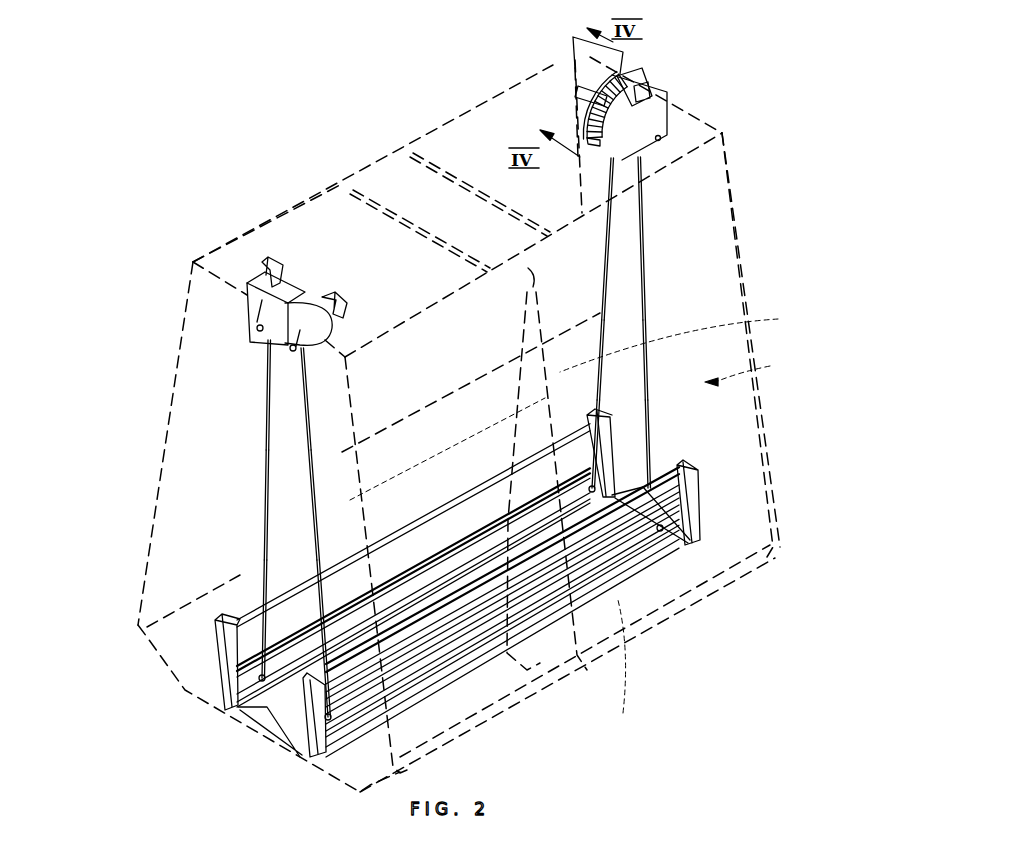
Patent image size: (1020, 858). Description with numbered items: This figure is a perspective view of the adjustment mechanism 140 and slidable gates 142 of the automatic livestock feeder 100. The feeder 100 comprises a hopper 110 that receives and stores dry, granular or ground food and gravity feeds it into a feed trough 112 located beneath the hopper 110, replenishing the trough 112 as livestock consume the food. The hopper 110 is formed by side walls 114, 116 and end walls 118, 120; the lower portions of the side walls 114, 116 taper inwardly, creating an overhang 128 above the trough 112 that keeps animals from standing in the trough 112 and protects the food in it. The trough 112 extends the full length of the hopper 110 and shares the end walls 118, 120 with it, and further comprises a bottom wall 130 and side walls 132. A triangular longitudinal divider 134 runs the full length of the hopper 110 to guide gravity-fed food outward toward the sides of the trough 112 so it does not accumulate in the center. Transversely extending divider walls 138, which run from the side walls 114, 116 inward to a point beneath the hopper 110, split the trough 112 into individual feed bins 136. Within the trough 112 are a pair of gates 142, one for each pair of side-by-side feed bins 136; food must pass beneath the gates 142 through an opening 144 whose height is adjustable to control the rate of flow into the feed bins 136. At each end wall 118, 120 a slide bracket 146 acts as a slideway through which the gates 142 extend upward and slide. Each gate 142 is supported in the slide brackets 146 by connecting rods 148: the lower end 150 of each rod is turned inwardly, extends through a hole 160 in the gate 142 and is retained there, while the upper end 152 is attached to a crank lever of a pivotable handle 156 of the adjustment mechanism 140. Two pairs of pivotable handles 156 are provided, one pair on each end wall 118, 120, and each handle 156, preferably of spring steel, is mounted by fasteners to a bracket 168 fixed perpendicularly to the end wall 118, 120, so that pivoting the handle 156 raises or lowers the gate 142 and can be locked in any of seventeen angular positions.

The feeder 100 is at (165, 108).
The hopper 110 is at (695, 194).
The feed trough 112 is at (693, 561).
The side wall 114 is at (386, 185).
The side wall 116 is at (520, 248).
The end wall 118 is at (682, 96).
The end wall 120 is at (217, 362).
The overhang 128 is at (752, 370).
The bottom wall 130 is at (198, 697).
The side walls 132 is at (473, 723).
The longitudinal divider 134 is at (257, 722).
The feed bins 136 is at (487, 685).
The divider walls 138 is at (685, 344).
The adjustment mechanism 140 is at (300, 268).
The gates 142 is at (647, 537).
The opening 144 is at (668, 614).
The slide bracket 146 is at (688, 462).
The connecting rods 148 is at (602, 312).
The lower end 150 is at (597, 387).
The upper end 152 is at (606, 240).
The pivotable handle 156 is at (583, 87).
The hole 160 is at (683, 527).
The bracket 168 is at (685, 128).